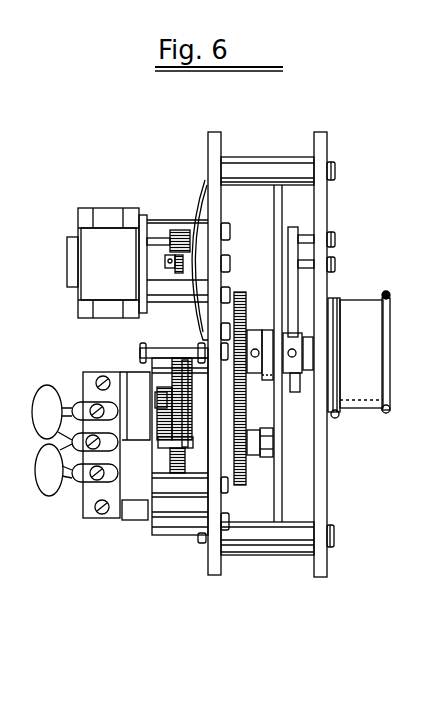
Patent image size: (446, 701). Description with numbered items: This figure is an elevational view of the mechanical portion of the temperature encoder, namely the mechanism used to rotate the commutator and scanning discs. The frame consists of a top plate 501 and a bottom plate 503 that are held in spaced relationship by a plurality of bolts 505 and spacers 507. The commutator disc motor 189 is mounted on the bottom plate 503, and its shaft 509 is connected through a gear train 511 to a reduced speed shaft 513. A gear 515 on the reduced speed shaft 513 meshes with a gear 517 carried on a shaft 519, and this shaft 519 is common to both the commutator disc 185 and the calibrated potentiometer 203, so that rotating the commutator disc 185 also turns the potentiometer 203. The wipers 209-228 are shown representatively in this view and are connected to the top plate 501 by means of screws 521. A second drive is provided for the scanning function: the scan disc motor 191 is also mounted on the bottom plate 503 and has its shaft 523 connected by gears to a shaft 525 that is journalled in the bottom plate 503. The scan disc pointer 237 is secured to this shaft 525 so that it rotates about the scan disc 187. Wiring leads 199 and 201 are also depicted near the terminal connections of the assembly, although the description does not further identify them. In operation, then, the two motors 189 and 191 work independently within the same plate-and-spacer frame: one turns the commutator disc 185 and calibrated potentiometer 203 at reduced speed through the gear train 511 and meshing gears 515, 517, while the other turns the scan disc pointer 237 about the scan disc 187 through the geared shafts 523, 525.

The scan disc motor 191 is at (103, 205).
The scan disc 187 is at (200, 186).
The shaft 525 is at (196, 214).
The shaft 523 is at (160, 285).
The scan disc pointer 237 is at (197, 313).
The gear 517 is at (241, 290).
The spacers 507 is at (276, 160).
The bolts 505 is at (335, 174).
The screws 521 is at (336, 240).
The wipers 209-228 is at (304, 290).
The calibrated potentiometer 203 is at (386, 395).
The top plate 501 is at (320, 478).
The bottom plate 503 is at (213, 578).
The gear 515 is at (240, 487).
The reduced speed shaft 513 is at (252, 428).
The shaft 519 is at (296, 376).
The commutator disc 185 is at (283, 435).
The shaft 509 is at (150, 468).
The gear train 511 is at (156, 389).
The wire 199 is at (43, 393).
The wire 201 is at (47, 478).
The commutator disc motor 189 is at (131, 522).